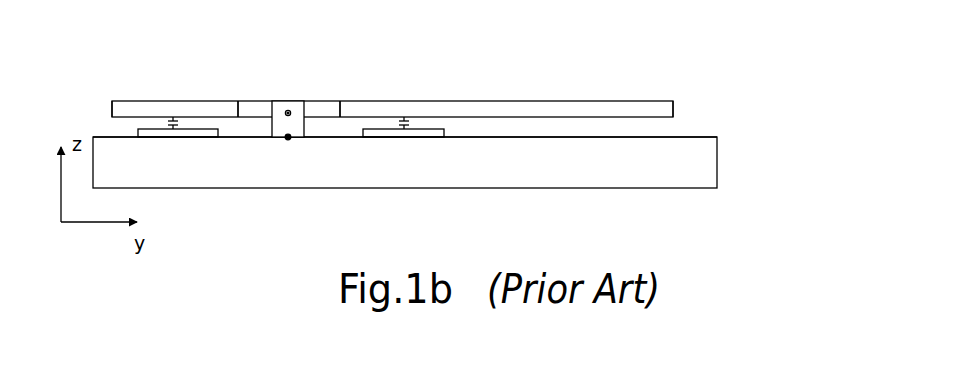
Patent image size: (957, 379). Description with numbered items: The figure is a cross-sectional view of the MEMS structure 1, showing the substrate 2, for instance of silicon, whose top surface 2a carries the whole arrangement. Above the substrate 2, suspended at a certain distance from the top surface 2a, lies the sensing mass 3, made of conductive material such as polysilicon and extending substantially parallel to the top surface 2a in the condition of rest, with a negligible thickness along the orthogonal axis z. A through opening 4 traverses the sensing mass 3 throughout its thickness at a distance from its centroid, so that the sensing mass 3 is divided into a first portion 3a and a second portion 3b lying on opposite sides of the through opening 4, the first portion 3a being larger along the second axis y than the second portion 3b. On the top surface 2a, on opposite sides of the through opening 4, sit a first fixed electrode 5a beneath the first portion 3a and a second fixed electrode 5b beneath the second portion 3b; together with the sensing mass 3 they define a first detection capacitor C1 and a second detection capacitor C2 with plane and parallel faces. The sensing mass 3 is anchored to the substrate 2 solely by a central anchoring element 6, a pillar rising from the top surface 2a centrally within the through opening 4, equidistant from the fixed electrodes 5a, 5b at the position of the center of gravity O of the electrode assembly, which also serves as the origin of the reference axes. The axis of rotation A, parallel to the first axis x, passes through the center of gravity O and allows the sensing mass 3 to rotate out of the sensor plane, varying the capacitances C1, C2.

The MEMS structure 1 is at (686, 78).
The substrate 2 is at (696, 172).
The top surface 2a is at (704, 131).
The sensing mass 3 is at (545, 110).
The first portion 3a is at (673, 108).
The second portion 3b is at (123, 108).
The through opening 4 is at (243, 109).
The first fixed electrode 5a is at (410, 133).
The second fixed electrode 5b is at (190, 132).
The central anchoring element 6 is at (280, 133).
The axis of rotation A is at (288, 110).
The center of gravity O is at (290, 139).
The first detection capacitor C1 is at (407, 118).
The second detection capacitor C2 is at (171, 117).